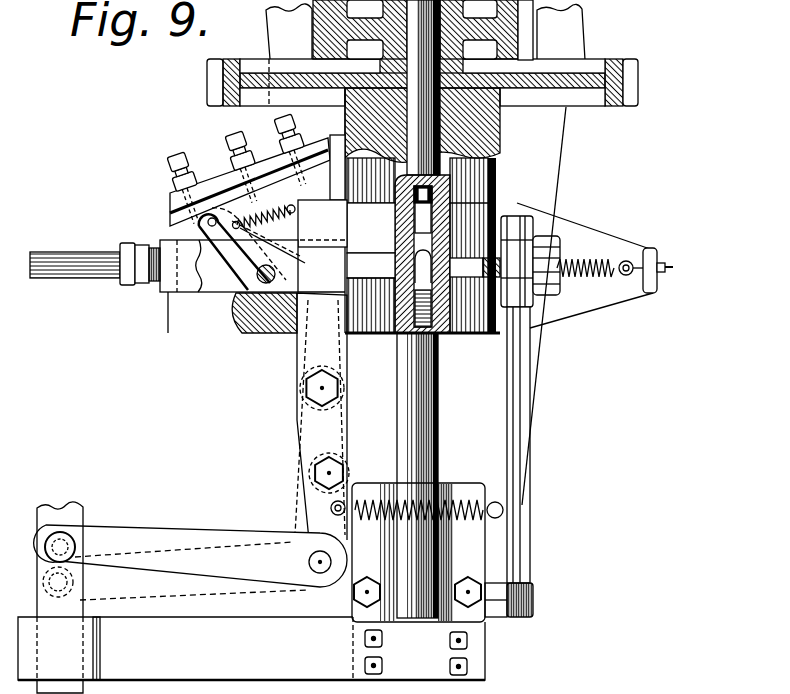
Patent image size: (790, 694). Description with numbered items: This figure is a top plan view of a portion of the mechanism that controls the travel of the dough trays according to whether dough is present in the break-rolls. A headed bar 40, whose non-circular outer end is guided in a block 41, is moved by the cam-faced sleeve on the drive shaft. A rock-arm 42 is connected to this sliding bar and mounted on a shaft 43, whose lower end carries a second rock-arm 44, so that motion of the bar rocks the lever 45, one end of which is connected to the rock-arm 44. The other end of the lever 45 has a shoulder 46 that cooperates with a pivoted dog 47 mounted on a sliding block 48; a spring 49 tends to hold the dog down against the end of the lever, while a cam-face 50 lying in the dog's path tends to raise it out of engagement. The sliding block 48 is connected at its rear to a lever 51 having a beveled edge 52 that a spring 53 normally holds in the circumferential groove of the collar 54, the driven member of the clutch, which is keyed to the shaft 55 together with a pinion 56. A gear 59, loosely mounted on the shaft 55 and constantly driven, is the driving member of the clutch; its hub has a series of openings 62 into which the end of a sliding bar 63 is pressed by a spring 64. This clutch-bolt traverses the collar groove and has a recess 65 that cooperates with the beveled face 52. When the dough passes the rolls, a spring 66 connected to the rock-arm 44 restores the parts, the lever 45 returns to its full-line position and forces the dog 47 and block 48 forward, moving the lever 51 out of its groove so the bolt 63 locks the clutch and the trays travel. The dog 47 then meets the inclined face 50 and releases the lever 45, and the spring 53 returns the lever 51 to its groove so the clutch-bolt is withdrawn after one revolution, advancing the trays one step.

The headed bar 40 is at (50, 517).
The block 41 is at (251, 648).
The rock-arm 42 is at (190, 562).
The shaft 43 is at (316, 570).
The rock-arm 44 is at (330, 509).
The lever 45 is at (317, 428).
The shoulder 46 is at (297, 330).
The pivoted dog 47 is at (277, 283).
The sliding block 48 is at (186, 272).
The spring 49 is at (283, 220).
The cam-face 50 is at (183, 222).
The lever 51 is at (541, 287).
The beveled edge 52 is at (503, 245).
The spring 53 is at (600, 262).
The driven member of clutch 54 is at (478, 334).
The shaft 55 is at (458, 417).
The pinion 56 is at (522, 31).
The gear 59 is at (626, 82).
The openings 62 is at (497, 163).
The sliding bar 63 is at (486, 243).
The spring 64 is at (400, 333).
The recess 65 is at (401, 244).
The spring 66 is at (503, 522).